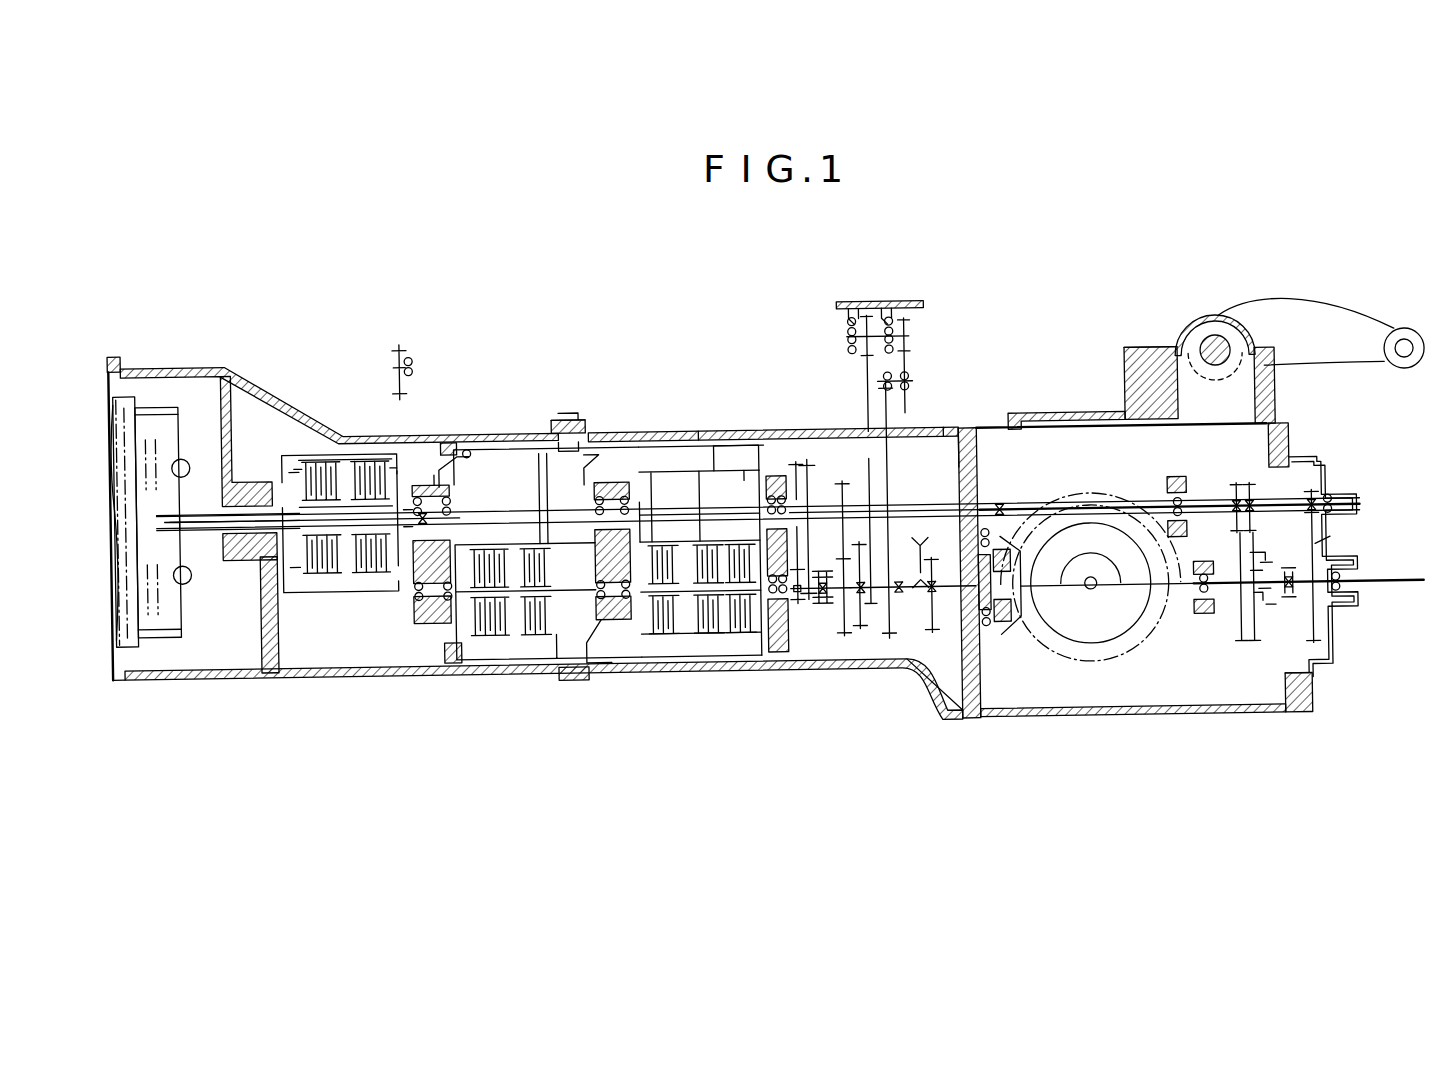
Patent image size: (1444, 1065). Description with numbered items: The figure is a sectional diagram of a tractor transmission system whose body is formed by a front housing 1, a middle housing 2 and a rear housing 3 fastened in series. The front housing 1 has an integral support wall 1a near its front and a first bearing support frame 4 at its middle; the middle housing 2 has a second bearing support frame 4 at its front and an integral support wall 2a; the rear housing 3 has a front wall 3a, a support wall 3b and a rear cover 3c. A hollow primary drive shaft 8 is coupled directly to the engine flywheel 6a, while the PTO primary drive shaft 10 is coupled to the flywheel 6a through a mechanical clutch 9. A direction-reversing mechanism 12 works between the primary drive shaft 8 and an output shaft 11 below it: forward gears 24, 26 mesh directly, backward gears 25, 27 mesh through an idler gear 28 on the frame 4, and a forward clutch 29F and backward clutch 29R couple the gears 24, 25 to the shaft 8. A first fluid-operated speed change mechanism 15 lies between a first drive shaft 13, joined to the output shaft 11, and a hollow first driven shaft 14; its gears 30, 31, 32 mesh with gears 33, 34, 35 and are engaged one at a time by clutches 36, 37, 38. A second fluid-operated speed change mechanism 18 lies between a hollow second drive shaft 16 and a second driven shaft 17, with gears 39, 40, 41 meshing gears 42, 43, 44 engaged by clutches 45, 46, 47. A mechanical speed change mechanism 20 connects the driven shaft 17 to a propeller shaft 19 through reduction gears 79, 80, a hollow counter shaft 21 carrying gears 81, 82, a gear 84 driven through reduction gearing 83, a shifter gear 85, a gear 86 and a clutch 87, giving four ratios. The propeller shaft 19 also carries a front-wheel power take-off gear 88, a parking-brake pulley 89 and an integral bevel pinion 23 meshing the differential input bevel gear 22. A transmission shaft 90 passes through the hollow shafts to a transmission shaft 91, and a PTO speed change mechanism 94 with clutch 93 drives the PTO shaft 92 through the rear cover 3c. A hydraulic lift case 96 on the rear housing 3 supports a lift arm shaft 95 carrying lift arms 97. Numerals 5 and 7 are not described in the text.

The front housing 1 is at (500, 430).
The support wall 1a is at (240, 410).
The middle housing 2 is at (776, 672).
The support wall 2a is at (777, 475).
The rear housing 3 is at (1170, 720).
The front wall 3a is at (979, 480).
The support wall 3b is at (1093, 592).
The rear cover 3c is at (1325, 480).
The bearing support frame 4 is at (425, 625).
The center support 5 is at (612, 478).
The engine flywheel 6a is at (133, 380).
The bolt 7 is at (192, 444).
The primary drive shaft 8 is at (262, 480).
The mechanical clutch 9 is at (172, 688).
The primary drive shaft 10 is at (195, 522).
The output shaft 11 is at (320, 568).
The direction-reversing mechanism 12 is at (360, 332).
The first drive shaft 13 is at (580, 665).
The first driven shaft 14 is at (538, 450).
The first fluid-operated speed change mechanism 15 is at (540, 640).
The second drive shaft 16 is at (725, 445).
The second driven shaft 17 is at (755, 660).
The second fluid-operated speed change mechanism 18 is at (700, 640).
The propeller shaft 19 is at (938, 700).
The mechanical speed change mechanism 20 is at (937, 436).
The counter shaft 21 is at (970, 440).
The input bevel gear 22 is at (1100, 655).
The bevel pinion 23 is at (1005, 650).
The forward directional gear 24 is at (340, 452).
The backward directional gear 25 is at (418, 372).
The forward directional gear 26 is at (268, 668).
The backward directional gear 27 is at (400, 655).
The idler gear 28 is at (405, 340).
The forward directional fluid-operated clutch 29F is at (313, 640).
The backward directional fluid-operated clutch 29R is at (330, 590).
The gear 30 is at (440, 655).
The gear 31 is at (570, 640).
The gear 32 is at (515, 640).
The gear 33 is at (458, 437).
The gear 34 is at (580, 425).
The gear 35 is at (566, 440).
The fluid-operated clutch 36 is at (468, 530).
The fluid-operated clutch 37 is at (538, 545).
The fluid-operated clutch 38 is at (478, 665).
The gear 39 is at (700, 430).
The gear 40 is at (745, 470).
The gear 41 is at (632, 500).
The gear 42 is at (660, 693).
The gear 43 is at (737, 640).
The gear 44 is at (632, 660).
The fluid-operated clutch 45 is at (702, 550).
The fluid-operated clutch 46 is at (705, 530).
The fluid-operated clutch 47 is at (655, 530).
The reduction gear 79 is at (812, 610).
The reduction gear 80 is at (808, 460).
The gear 81 is at (872, 488).
The gear 82 is at (798, 480).
The reduction gearing 83 is at (945, 320).
The gear 84 is at (880, 370).
The shifter gear 85 is at (918, 630).
The gear 86 is at (845, 600).
The clutch 87 is at (822, 585).
The gear 88 is at (890, 640).
The pulley 89 is at (1045, 520).
The transmission shaft 90 is at (948, 528).
The transmission shaft 91 is at (1172, 495).
The PTO shaft 92 is at (1380, 593).
The clutch 93 is at (1245, 620).
The PTO speed change mechanism 94 is at (1323, 556).
The lift arm shaft 95 is at (1222, 350).
The hydraulic lift case 96 is at (1150, 352).
The lift arm 97 is at (1335, 318).